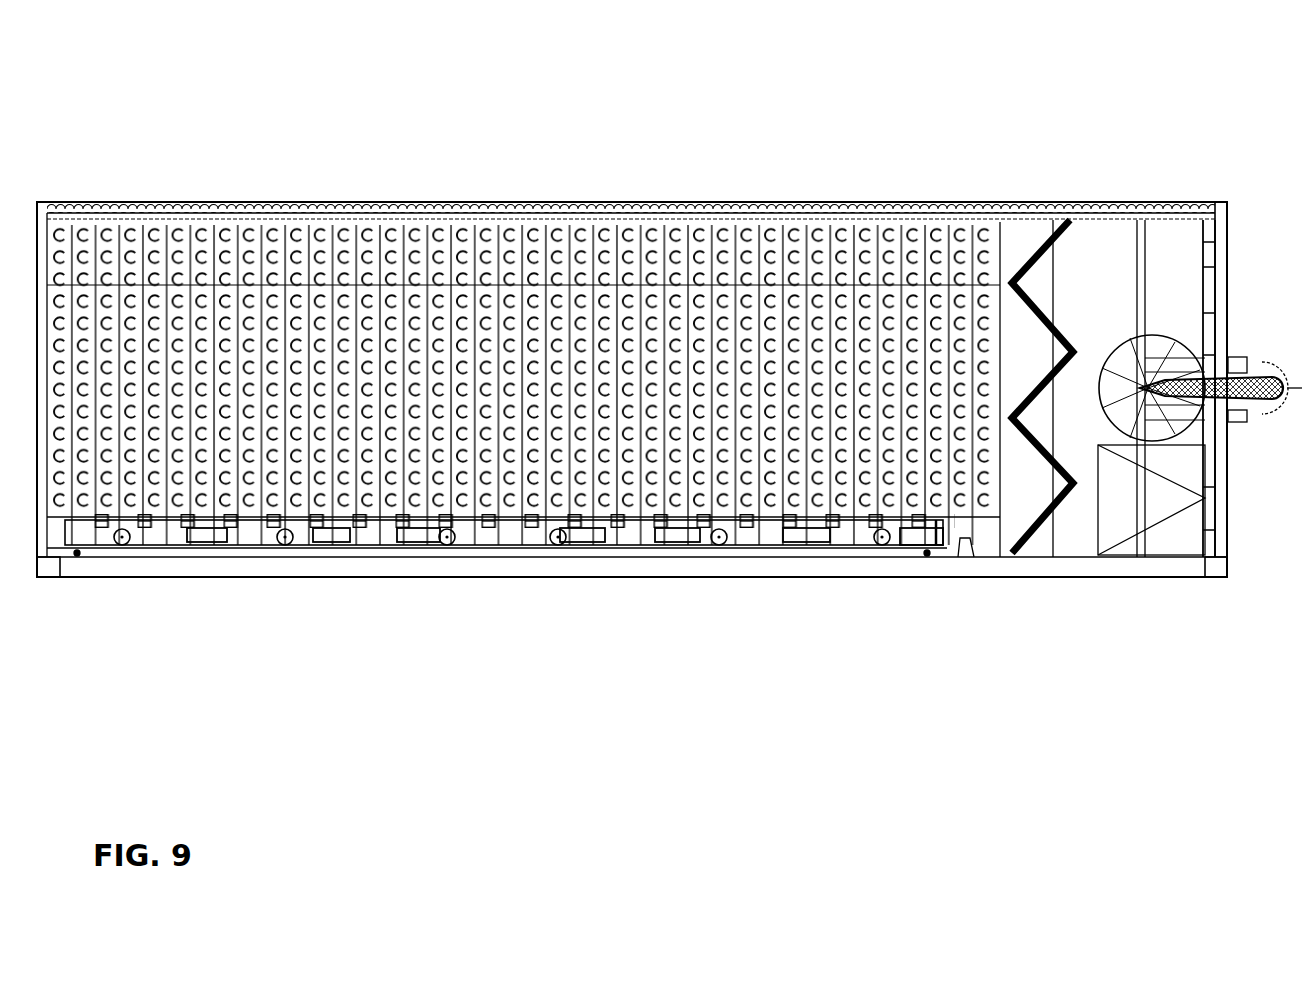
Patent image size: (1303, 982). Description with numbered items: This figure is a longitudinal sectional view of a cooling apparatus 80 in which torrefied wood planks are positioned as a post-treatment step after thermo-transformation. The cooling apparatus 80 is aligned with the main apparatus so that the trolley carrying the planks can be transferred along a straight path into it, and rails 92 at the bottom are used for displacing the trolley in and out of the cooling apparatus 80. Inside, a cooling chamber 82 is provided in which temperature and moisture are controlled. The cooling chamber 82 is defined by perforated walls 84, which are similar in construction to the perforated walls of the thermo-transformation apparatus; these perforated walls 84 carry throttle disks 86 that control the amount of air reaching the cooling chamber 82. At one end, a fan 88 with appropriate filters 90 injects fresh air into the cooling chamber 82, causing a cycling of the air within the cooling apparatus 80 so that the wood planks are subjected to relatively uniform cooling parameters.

The cooling apparatus 80 is at (445, 145).
The cooling chamber 82 is at (1020, 240).
The perforated walls 84 is at (515, 247).
The throttle disks 86 is at (250, 232).
The fan 88 is at (1160, 335).
The filters 90 is at (1045, 540).
The rails 92 is at (483, 548).